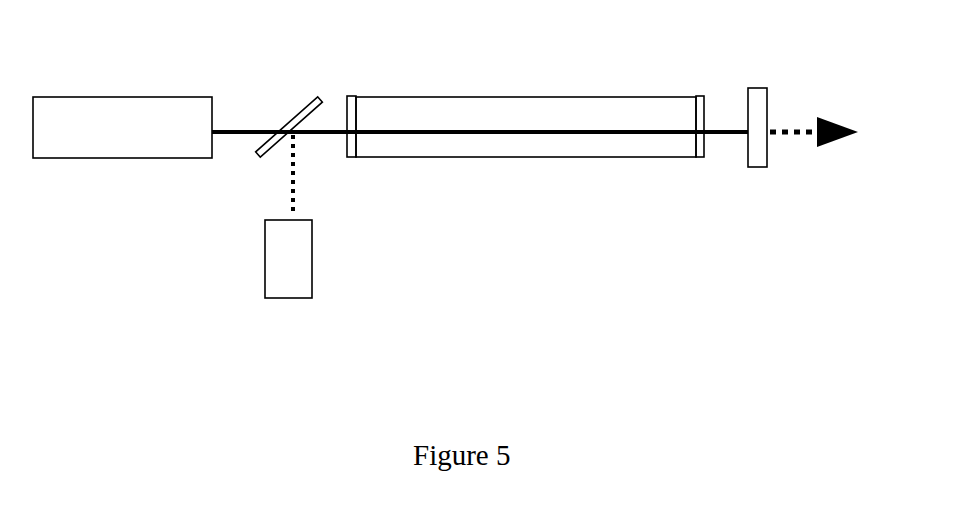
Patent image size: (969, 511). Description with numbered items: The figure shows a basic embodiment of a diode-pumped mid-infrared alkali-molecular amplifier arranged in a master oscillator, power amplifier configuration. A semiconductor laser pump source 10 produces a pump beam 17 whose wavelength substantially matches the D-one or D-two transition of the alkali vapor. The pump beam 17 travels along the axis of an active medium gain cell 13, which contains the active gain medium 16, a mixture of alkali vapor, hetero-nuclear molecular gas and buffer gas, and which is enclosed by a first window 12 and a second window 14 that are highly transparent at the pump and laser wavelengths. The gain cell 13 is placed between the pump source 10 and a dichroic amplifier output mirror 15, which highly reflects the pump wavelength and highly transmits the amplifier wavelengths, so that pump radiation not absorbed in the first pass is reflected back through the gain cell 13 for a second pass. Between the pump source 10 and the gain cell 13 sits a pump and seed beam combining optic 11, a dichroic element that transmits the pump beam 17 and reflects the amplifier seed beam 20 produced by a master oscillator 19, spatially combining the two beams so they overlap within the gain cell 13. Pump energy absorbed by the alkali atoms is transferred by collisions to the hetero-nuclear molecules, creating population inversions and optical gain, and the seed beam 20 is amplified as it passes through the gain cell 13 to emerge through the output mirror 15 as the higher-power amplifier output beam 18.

The semiconductor laser pump source 10 is at (87, 96).
The pump and seed beam combining optic 11 is at (258, 152).
The first window 12 is at (347, 95).
The active medium gain cell 13 is at (525, 96).
The second window 14 is at (705, 95).
The dichroic amplifier output mirror 15 is at (770, 86).
The active gain medium 16 is at (570, 141).
The pump beam 17 is at (238, 129).
The amplifier output beam 18 is at (838, 132).
The master oscillator 19 is at (263, 255).
The amplifier seed beam 20 is at (298, 194).